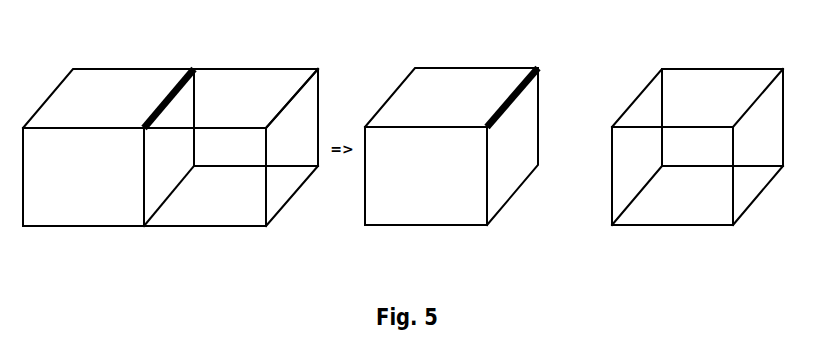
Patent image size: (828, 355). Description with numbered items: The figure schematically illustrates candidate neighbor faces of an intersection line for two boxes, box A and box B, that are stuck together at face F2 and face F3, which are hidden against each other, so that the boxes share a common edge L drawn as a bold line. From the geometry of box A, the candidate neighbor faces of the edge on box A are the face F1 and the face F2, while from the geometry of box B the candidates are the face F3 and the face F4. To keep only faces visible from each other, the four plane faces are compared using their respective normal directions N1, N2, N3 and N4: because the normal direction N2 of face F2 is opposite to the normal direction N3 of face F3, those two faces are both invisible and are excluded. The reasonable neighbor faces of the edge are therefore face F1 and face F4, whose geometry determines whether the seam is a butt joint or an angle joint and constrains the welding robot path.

The face F1 is at (280, 98).
The face F2 is at (341, 98).
The face F3 is at (403, 196).
The face F4 is at (488, 98).
The normal direction N1 is at (114, 88).
The normal direction N2 is at (176, 141).
The normal direction N3 is at (167, 142).
The normal direction N4 is at (236, 90).